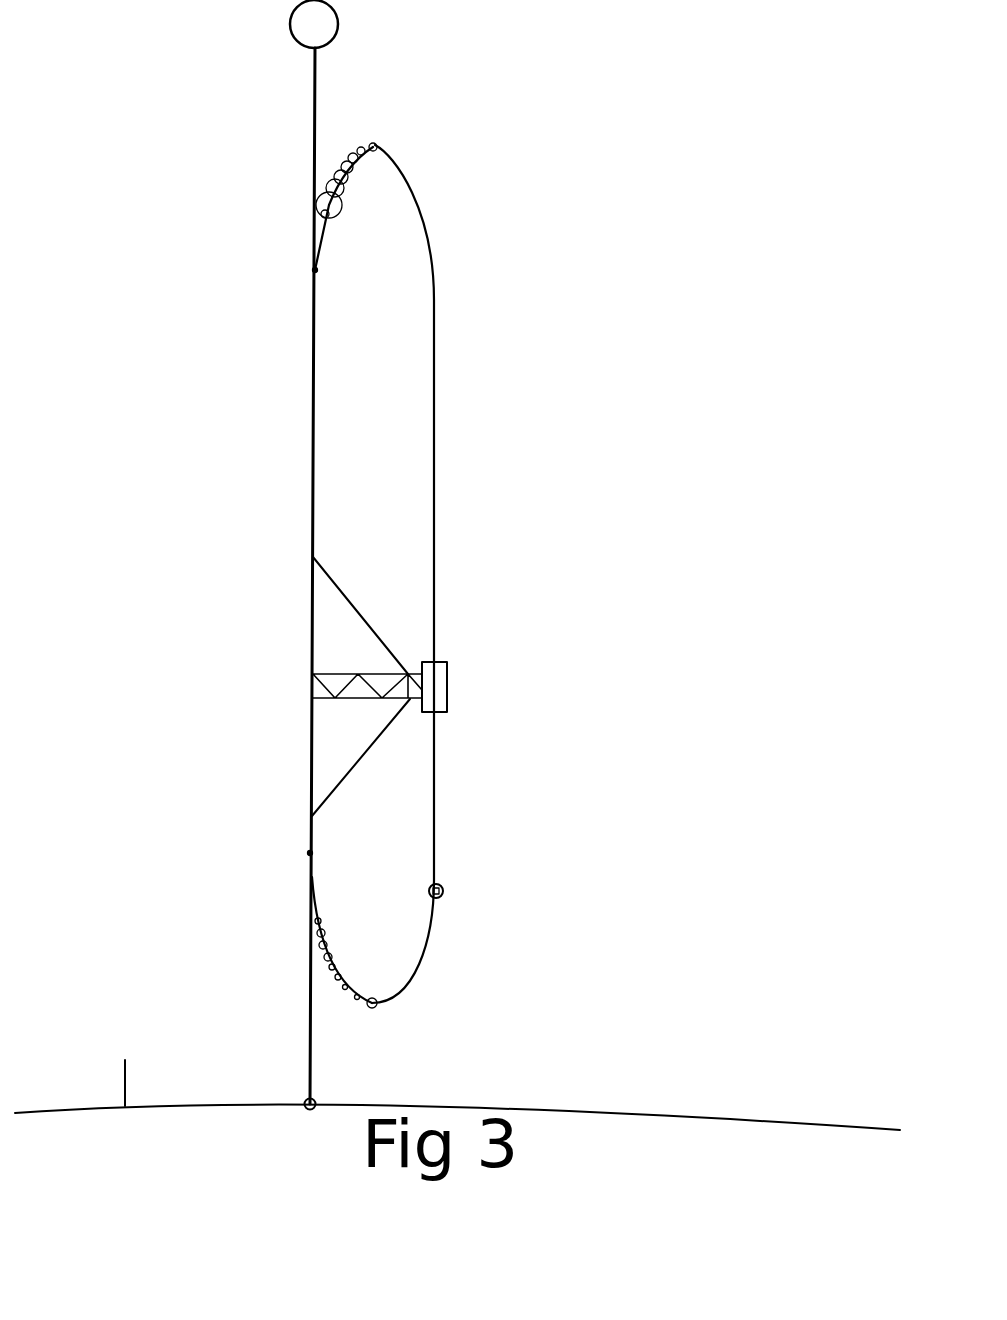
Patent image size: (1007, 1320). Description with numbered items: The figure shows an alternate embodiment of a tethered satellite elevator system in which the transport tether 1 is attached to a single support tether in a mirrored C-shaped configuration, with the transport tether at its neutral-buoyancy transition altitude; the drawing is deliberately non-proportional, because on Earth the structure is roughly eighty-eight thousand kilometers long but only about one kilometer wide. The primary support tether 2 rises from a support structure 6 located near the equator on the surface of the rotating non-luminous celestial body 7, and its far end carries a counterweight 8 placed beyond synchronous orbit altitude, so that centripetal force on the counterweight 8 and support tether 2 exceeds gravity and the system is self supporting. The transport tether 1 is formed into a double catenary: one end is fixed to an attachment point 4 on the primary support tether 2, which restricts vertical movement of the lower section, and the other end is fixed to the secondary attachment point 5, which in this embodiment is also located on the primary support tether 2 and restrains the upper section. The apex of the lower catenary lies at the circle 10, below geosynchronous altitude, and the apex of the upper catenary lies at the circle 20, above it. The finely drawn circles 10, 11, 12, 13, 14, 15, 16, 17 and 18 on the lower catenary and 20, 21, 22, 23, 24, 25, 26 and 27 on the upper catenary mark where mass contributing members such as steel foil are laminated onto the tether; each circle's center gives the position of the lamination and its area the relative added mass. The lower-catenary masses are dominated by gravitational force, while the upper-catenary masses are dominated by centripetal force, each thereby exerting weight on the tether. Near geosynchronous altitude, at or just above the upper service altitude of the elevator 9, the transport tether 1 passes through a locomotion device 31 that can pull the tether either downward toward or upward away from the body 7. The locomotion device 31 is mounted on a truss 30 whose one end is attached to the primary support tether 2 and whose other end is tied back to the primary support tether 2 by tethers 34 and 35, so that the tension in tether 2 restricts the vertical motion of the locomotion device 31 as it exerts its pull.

The transport tether 1 is at (322, 247).
The primary support tether 2 is at (313, 73).
The attachment point 4 is at (310, 853).
The secondary attachment point 5 is at (315, 270).
The support structure 6 is at (307, 1100).
The rotating non-luminous celestial body 7 is at (130, 1069).
The counterweight 8 is at (291, 29).
The elevator 9 is at (445, 891).
The mass contributing member location 10 is at (372, 1008).
The mass contributing member location 11 is at (357, 1000).
The mass contributing member location 12 is at (345, 990).
The mass contributing member location 13 is at (337, 980).
The mass contributing member location 14 is at (335, 970).
The mass contributing member location 15 is at (332, 957).
The mass contributing member location 16 is at (327, 946).
The mass contributing member location 17 is at (324, 932).
The mass contributing member location 18 is at (320, 918).
The mass contributing member location 20 is at (377, 148).
The mass contributing member location 21 is at (358, 155).
The mass contributing member location 22 is at (343, 177).
The mass contributing member location 23 is at (337, 183).
The mass contributing member location 24 is at (335, 180).
The mass contributing member location 25 is at (341, 187).
The mass contributing member location 26 is at (338, 198).
The mass contributing member location 27 is at (328, 214).
The truss 30 is at (372, 673).
The locomotion device 31 is at (440, 664).
The tether 34 is at (360, 765).
The tether 35 is at (358, 606).